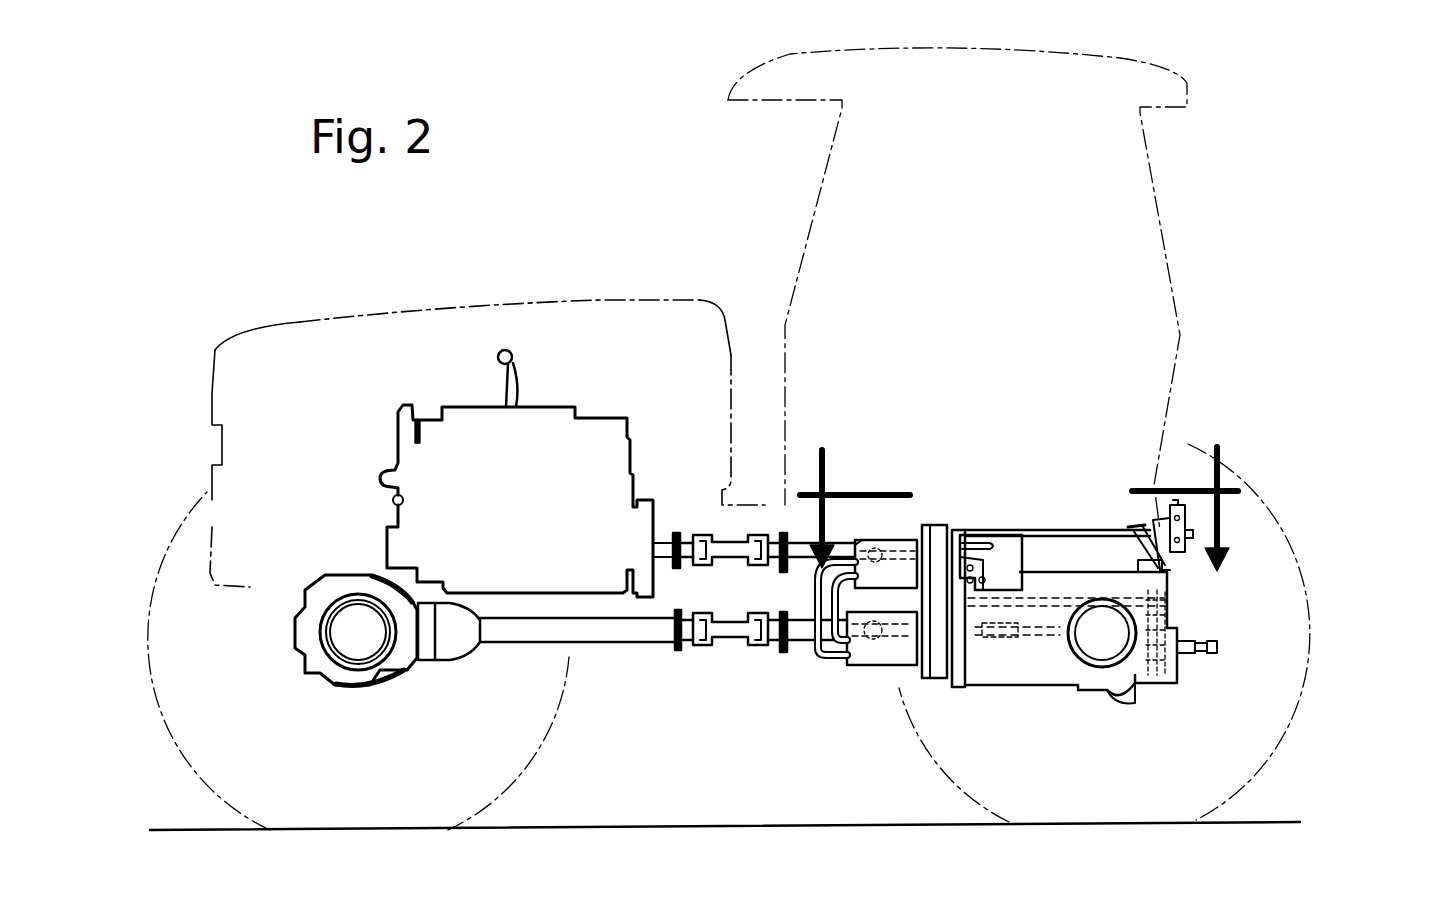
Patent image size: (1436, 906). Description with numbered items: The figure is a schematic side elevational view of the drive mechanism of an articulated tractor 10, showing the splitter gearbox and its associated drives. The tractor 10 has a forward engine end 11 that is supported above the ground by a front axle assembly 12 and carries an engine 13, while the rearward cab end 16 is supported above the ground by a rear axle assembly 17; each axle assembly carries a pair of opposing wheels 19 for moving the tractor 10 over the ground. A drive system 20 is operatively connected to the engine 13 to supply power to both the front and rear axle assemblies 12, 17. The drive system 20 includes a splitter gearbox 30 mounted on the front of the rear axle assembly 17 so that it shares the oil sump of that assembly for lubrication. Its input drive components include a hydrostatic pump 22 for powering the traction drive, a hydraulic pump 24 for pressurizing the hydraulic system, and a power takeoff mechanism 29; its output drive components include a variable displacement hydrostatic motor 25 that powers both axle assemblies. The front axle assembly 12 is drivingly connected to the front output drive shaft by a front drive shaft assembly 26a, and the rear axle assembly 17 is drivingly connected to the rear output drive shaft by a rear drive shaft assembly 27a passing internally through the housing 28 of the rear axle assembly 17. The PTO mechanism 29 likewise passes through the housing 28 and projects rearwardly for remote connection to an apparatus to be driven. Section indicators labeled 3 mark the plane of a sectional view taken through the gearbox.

The articulated tractor 10 is at (1160, 218).
The forward engine end 11 is at (278, 292).
The front axle assembly 12 is at (297, 647).
The engine 13 is at (397, 448).
The rearward cab end 16 is at (1228, 370).
The rear axle assembly 17 is at (1112, 666).
The wheels 19 is at (178, 532).
The drive system 20 is at (685, 703).
The hydrostatic pump 22 is at (900, 535).
The hydraulic pump 24 is at (1005, 562).
The variable displacement hydrostatic motor 25 is at (860, 667).
The front drive shaft assembly 26a is at (517, 633).
The rear drive shaft assembly 27a is at (1037, 637).
The housing 28 is at (977, 690).
The power takeoff (PTO) mechanism 29 is at (1217, 646).
The splitter gearbox 30 is at (907, 682).
The section line 3- 3 is at (1019, 488).